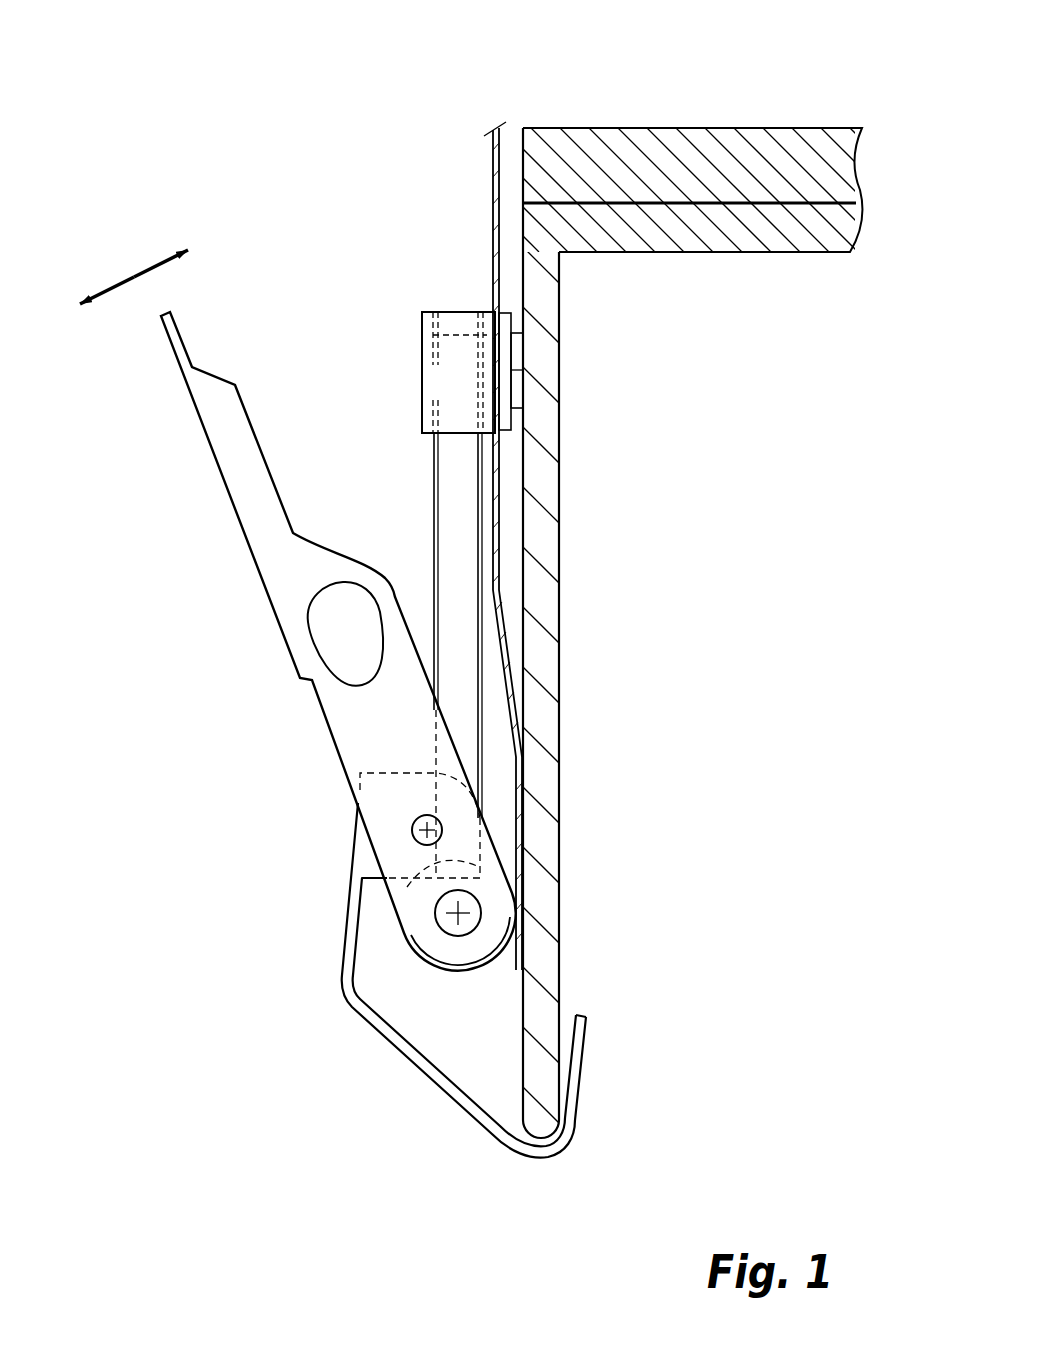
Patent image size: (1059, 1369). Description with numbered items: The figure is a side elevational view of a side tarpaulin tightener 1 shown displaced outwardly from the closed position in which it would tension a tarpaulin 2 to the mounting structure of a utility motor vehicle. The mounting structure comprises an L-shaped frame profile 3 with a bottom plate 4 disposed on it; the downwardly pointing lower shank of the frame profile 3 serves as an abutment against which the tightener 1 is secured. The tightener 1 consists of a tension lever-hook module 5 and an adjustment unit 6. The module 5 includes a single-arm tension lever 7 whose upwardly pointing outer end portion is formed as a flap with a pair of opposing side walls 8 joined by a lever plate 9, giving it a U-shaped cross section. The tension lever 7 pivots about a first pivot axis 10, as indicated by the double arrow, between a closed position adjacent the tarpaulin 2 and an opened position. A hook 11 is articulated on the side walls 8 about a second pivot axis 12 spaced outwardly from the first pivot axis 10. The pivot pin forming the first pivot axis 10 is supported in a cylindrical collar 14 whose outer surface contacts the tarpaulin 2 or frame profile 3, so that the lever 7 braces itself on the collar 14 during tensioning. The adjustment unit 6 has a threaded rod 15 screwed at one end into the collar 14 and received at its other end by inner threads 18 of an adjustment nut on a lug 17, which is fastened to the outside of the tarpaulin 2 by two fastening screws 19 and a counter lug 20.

The side tarpaulin tightener 1 is at (322, 165).
The tarpaulin 2 is at (491, 237).
The frame profile 3 is at (570, 428).
The bottom plate 4 is at (688, 177).
The tension lever-hook module 5 is at (250, 735).
The adjustment unit 6 is at (355, 406).
The tension lever 7 is at (225, 531).
The side wall 8 is at (381, 744).
The lever plate 9 is at (200, 356).
The first pivot axis 10 is at (445, 920).
The hook 11 is at (445, 1108).
The second pivot axis 12 is at (411, 832).
The cylindrical collar 14 is at (420, 966).
The threaded rod 15 is at (437, 588).
The lug 17 is at (476, 404).
The inner threads 18 is at (432, 309).
The fastening screws 19 is at (520, 357).
The counter lug 20 is at (505, 436).